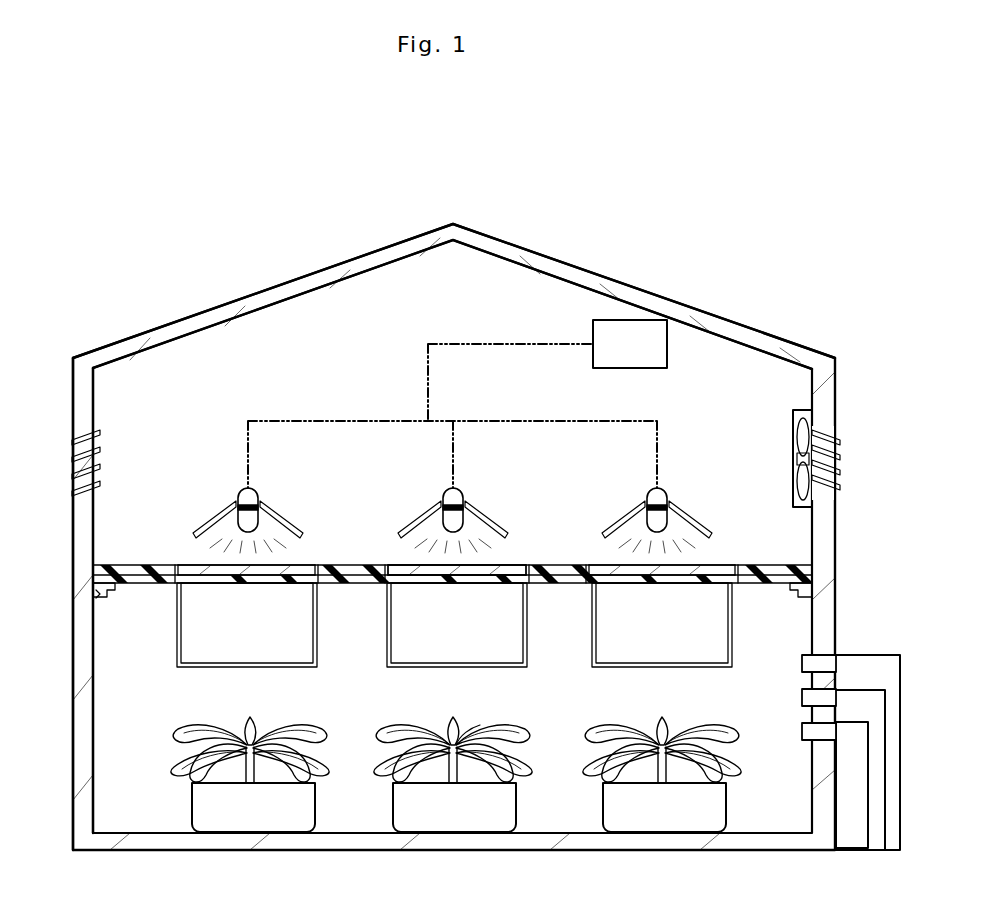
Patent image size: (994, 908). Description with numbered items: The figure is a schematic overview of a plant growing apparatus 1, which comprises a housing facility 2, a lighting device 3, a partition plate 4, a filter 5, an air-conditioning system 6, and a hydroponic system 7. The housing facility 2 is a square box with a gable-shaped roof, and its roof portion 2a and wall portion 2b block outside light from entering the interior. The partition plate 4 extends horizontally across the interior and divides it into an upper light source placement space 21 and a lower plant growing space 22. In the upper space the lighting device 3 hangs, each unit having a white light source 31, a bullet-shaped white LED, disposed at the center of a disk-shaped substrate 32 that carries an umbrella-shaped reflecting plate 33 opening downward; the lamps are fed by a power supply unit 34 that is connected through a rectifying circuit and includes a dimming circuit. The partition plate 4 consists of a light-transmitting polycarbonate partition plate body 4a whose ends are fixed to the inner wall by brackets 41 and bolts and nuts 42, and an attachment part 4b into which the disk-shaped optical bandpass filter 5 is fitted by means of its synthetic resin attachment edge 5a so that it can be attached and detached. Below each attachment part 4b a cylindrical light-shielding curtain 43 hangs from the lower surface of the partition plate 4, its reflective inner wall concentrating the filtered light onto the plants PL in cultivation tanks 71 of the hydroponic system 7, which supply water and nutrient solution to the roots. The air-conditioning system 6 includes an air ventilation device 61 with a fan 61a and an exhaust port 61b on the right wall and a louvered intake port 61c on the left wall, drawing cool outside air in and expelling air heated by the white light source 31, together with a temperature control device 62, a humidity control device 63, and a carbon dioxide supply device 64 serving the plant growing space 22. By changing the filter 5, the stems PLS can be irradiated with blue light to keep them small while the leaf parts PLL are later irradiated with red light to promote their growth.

The plant growing apparatus 1 is at (240, 185).
The housing facility 2 is at (170, 333).
The roof portion 2a is at (250, 306).
The wall portion 2b is at (78, 538).
The lighting device 3 is at (262, 498).
The white light source 31 is at (258, 515).
The substrate 32 is at (244, 496).
The reflecting plate 33 is at (206, 532).
The power supply unit 34 is at (638, 322).
The light source placement space 21 is at (552, 407).
The plant growing space 22 is at (577, 712).
The partition plate 4 is at (322, 568).
The partition plate body 4a is at (453, 574).
The attachment part 4b is at (392, 562).
The brackets 41 is at (104, 596).
The bolts and nuts 42 is at (100, 598).
The light-shielding curtain 43 is at (386, 632).
The filter 5 is at (498, 570).
The attachment edge 5a is at (520, 566).
The air-conditioning system 6 is at (856, 628).
The air ventilation device 61 is at (790, 428).
The fan 61a is at (802, 458).
The exhaust port 61b is at (838, 450).
The intake port 61c is at (76, 446).
The temperature control device 62 is at (866, 760).
The humidity control device 63 is at (880, 706).
The carbon dioxide supply device 64 is at (876, 652).
The hydroponic system 7 is at (465, 831).
The cultivation tank 71 is at (710, 812).
The plants to be grown PL is at (185, 755).
The leaf parts PLL is at (418, 740).
The stems PLS is at (458, 750).